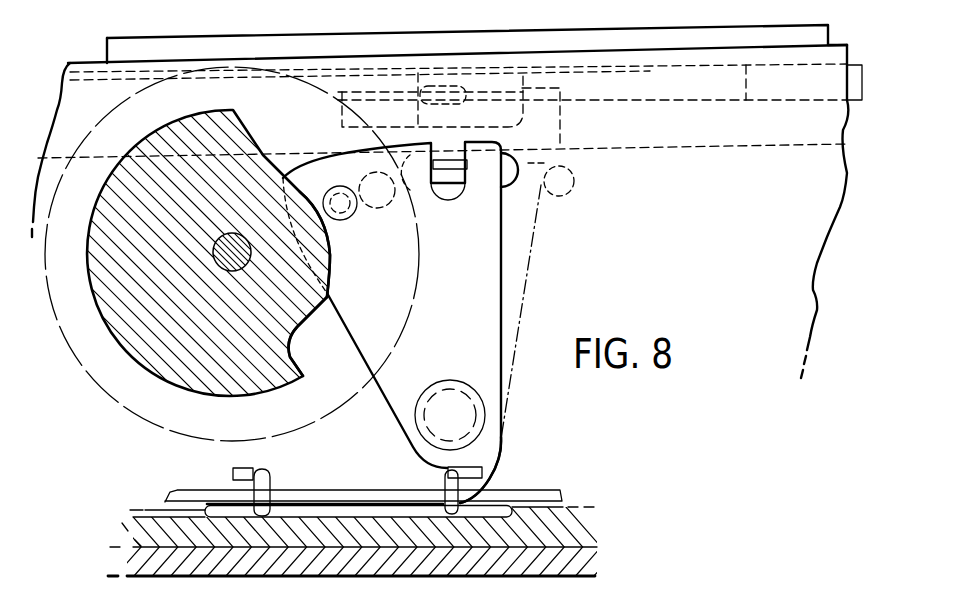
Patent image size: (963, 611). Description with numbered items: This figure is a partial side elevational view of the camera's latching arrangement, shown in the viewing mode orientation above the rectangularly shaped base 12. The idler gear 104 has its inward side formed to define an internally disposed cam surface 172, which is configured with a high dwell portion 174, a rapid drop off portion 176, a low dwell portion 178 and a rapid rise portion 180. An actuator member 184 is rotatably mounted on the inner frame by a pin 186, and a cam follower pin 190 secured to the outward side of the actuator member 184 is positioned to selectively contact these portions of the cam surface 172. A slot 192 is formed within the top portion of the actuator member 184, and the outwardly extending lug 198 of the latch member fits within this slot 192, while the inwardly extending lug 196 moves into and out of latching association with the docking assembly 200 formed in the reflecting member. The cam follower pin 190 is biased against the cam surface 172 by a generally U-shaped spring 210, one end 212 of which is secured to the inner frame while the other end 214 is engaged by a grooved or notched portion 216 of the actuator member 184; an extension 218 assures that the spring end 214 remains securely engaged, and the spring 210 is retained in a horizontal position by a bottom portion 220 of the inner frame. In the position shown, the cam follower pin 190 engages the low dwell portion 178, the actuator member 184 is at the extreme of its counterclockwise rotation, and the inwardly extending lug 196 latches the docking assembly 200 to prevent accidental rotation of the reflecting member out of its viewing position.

The base 12 is at (572, 522).
The idler gear 104 is at (113, 370).
The cam surface 172 is at (187, 217).
The high dwell portion 174 is at (140, 128).
The rapid drop off portion 176 is at (288, 350).
The low dwell portion 178 is at (333, 243).
The rapid rise portion 180 is at (243, 122).
The actuator member 184 is at (480, 250).
The pin 186 is at (452, 410).
The cam follower pin 190 is at (347, 212).
The slot 192 is at (445, 198).
The inwardly extending lug 196 is at (450, 80).
The outwardly extending lug 198 is at (452, 168).
The docking assembly 200 is at (427, 118).
The spring 210 is at (303, 505).
The spring end 212 is at (250, 469).
The spring end 214 is at (437, 490).
The grooved portion 216 is at (443, 474).
The extension 218 is at (487, 477).
The bottom portion 220 is at (545, 495).